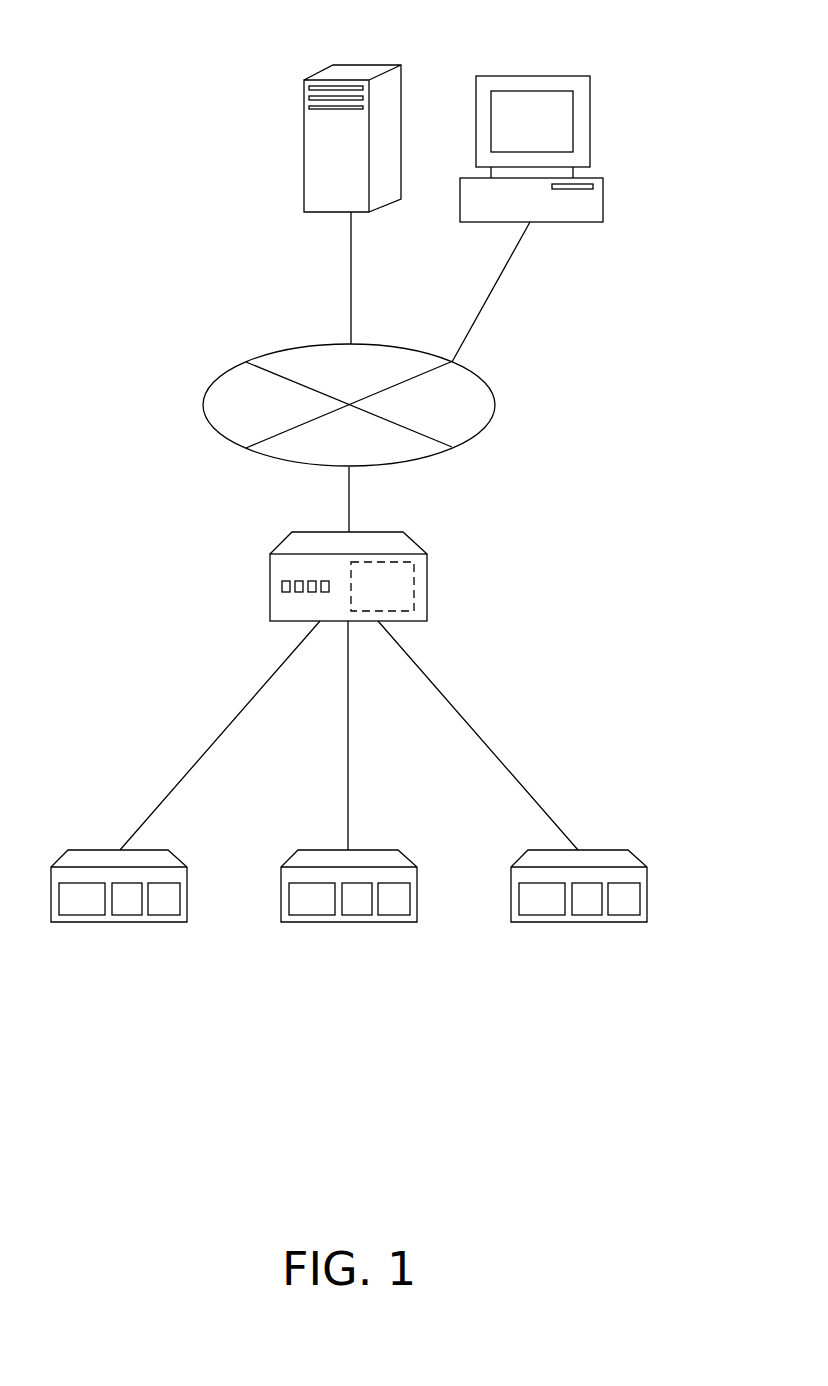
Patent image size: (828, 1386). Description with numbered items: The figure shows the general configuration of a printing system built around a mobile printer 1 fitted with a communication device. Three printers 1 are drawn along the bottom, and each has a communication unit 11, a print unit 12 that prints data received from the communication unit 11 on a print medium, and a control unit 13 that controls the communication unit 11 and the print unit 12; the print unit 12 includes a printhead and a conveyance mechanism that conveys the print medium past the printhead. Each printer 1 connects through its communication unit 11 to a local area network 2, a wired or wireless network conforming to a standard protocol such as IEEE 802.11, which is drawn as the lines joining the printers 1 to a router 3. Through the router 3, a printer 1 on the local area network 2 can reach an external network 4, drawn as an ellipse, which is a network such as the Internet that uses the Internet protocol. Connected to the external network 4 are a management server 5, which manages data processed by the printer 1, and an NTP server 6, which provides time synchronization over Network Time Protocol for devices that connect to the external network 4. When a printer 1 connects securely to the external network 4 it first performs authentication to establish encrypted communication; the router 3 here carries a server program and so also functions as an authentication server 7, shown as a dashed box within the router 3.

The printer 1 is at (173, 853).
The local area network 2 is at (458, 703).
The router 3 is at (427, 545).
The external network 4 is at (494, 385).
The management server 5 is at (590, 108).
The NTP server 6 is at (402, 82).
The authentication server 7 is at (414, 585).
The communication unit 11 is at (83, 915).
The print unit 12 is at (163, 915).
The control unit 13 is at (125, 915).